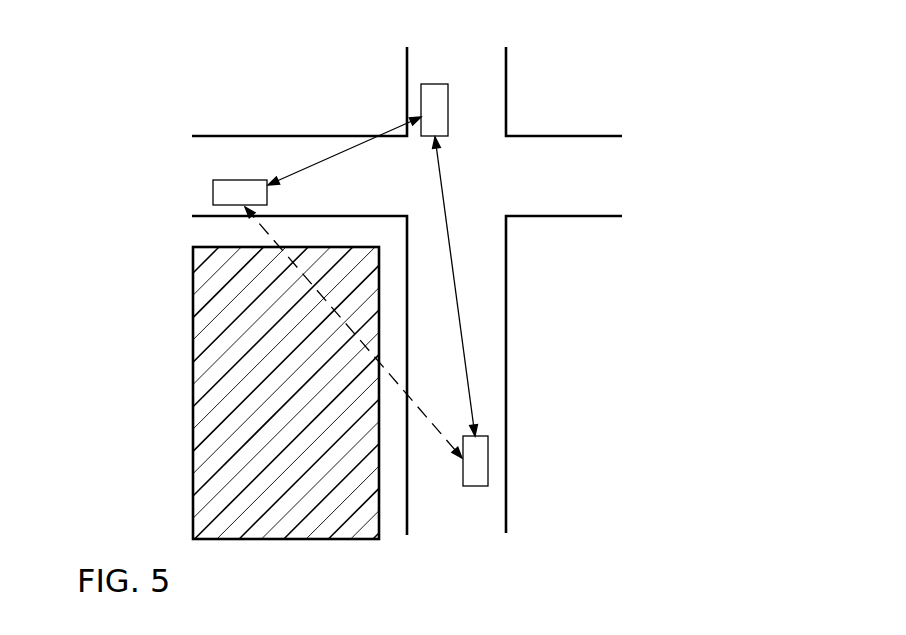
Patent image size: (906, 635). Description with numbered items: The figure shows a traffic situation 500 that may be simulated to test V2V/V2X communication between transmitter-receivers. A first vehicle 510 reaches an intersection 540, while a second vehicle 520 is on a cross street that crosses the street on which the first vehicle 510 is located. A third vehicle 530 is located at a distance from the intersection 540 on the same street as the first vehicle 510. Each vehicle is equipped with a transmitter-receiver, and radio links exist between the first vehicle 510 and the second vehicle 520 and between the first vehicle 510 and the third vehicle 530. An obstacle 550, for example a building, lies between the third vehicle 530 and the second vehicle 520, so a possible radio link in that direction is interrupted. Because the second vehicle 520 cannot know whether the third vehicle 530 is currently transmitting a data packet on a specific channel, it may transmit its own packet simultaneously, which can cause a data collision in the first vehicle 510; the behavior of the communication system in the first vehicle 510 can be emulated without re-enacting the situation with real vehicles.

The traffic situation 500 is at (682, 60).
The first vehicle 510 is at (437, 88).
The second vehicle 520 is at (235, 180).
The third vehicle 530 is at (487, 462).
The intersection 540 is at (461, 177).
The obstacle 550 is at (202, 461).